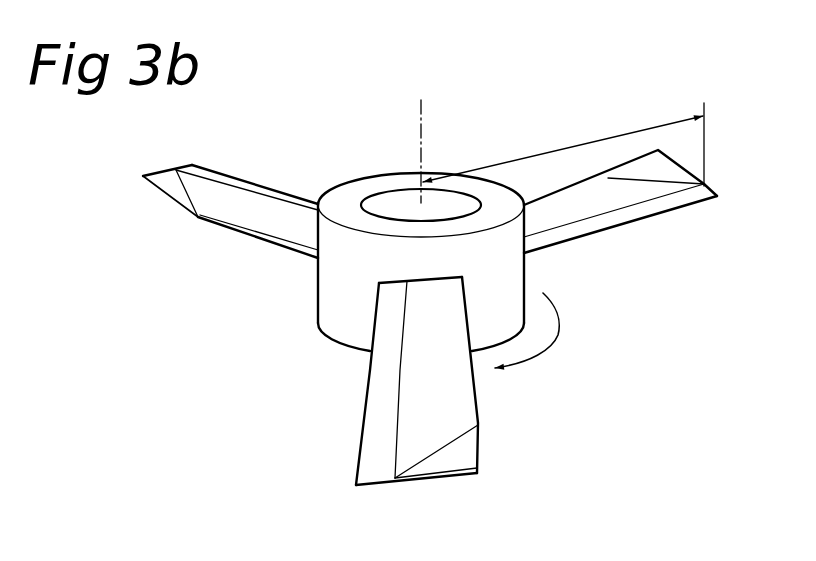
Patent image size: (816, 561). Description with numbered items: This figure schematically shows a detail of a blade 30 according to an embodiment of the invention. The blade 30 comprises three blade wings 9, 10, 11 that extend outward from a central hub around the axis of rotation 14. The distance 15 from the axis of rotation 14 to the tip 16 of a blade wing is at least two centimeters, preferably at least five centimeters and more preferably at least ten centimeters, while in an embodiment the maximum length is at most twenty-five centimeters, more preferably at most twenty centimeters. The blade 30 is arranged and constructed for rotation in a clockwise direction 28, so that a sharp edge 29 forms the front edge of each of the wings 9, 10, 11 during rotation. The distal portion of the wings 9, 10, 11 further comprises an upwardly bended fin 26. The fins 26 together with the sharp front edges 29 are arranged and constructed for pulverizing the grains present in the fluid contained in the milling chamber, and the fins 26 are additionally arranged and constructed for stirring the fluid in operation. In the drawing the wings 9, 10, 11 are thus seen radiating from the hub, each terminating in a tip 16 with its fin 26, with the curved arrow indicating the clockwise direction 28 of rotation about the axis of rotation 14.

The blade wing 9 is at (237, 243).
The blade wing 10 is at (392, 382).
The blade wing 11 is at (626, 236).
The axis of rotation 14 is at (421, 112).
The distance 15 is at (563, 144).
The tip 16 is at (177, 169).
The upwardly bended fin 26 is at (464, 455).
The clockwise direction 28 is at (559, 334).
The sharp edge 29 is at (371, 466).
The blade 30 is at (450, 153).